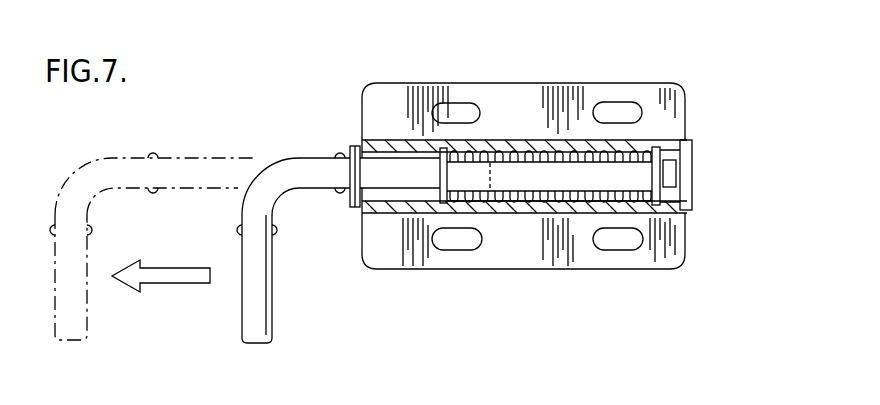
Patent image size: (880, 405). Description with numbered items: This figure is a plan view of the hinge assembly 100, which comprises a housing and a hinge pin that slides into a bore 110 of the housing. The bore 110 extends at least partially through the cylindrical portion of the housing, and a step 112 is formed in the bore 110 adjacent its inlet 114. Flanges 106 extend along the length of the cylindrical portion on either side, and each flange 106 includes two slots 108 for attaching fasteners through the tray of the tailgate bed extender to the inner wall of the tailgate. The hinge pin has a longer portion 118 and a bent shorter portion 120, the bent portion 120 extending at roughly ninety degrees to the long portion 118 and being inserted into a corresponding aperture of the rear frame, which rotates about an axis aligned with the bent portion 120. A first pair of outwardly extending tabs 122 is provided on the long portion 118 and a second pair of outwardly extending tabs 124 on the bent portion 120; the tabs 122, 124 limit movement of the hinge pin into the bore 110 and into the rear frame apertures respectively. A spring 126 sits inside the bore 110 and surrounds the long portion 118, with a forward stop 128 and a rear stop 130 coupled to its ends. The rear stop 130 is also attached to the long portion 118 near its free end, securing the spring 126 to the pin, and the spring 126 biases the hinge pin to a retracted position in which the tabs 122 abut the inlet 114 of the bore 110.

The hinge assembly 100 is at (313, 90).
The flange 106 is at (403, 94).
The slot 108 is at (622, 115).
The bore 110 is at (510, 148).
The step 112 is at (391, 214).
The inlet 114 is at (349, 148).
The longer portion 118 is at (572, 184).
The bent shorter portion 120 is at (250, 312).
The first pair of outwardly extending tabs 122 is at (333, 196).
The second pair of outwardly extending tabs 124 is at (234, 232).
The spring 126 is at (508, 202).
The forward stop 128 is at (432, 206).
The rear stop 130 is at (667, 140).